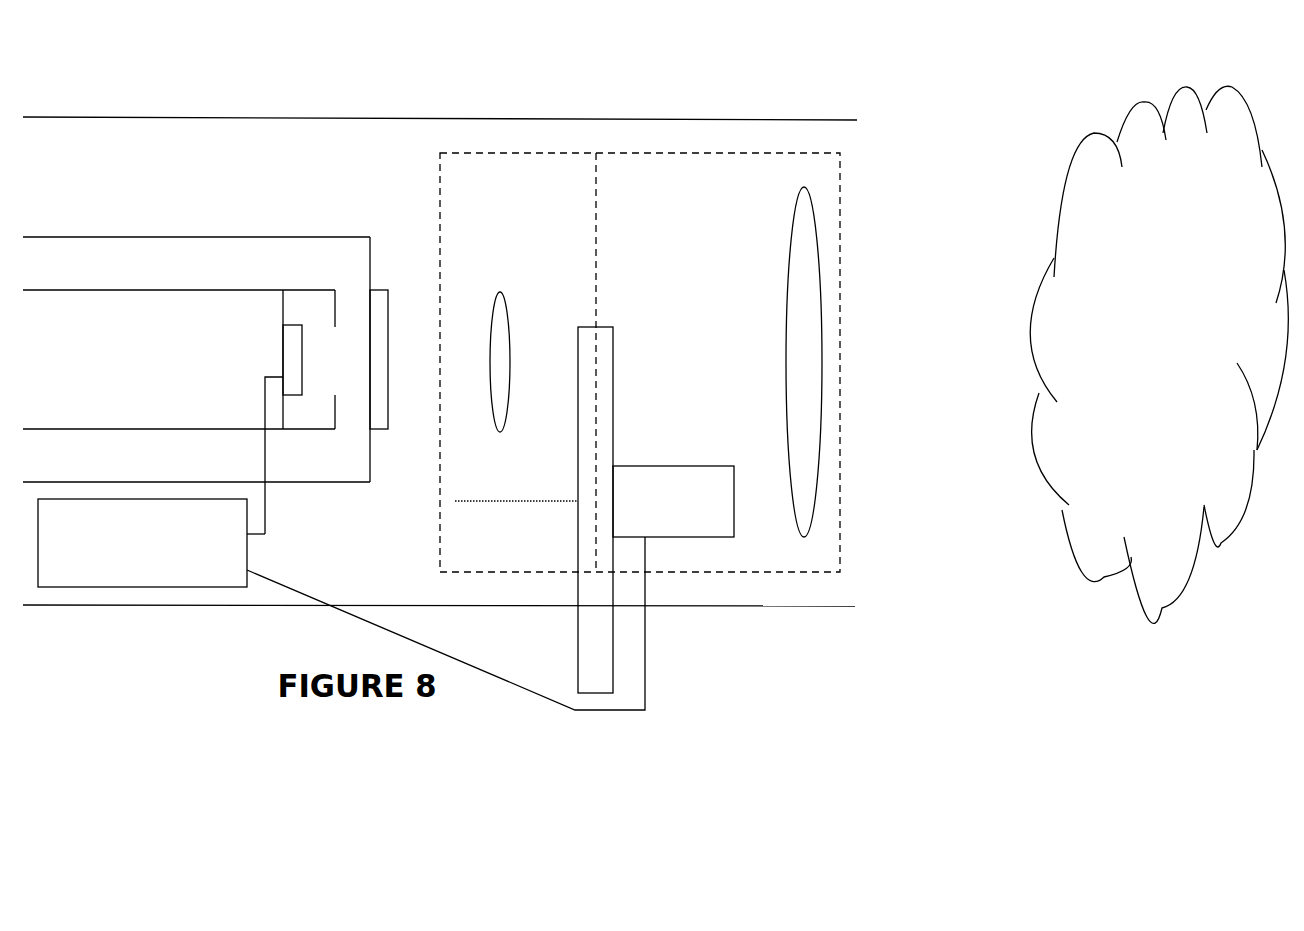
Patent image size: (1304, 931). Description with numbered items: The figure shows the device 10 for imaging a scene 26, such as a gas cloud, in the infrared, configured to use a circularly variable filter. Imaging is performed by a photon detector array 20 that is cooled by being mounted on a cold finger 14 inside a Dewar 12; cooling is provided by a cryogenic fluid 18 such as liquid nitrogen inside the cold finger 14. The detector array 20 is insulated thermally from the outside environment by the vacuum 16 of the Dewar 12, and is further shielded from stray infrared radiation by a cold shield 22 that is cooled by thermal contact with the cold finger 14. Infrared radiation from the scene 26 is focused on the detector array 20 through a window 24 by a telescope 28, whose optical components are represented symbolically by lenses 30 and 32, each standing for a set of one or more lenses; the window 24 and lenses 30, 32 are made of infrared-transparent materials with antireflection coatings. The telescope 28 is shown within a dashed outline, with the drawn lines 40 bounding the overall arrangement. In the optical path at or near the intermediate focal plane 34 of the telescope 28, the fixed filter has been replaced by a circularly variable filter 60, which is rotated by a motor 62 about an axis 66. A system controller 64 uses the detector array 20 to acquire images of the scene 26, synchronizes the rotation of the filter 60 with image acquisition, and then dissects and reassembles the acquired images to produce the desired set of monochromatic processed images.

The device 10 is at (771, 84).
The Dewar 12 is at (180, 237).
The cold finger 14 is at (248, 290).
The vacuum 16 is at (88, 269).
The cryogenic fluid 18 is at (54, 358).
The photon detector array 20 is at (283, 363).
The cold shield 22 is at (300, 432).
The window 24 is at (385, 430).
The scene 26 is at (1131, 309).
The telescope 28 is at (683, 572).
The lens 30 is at (804, 276).
The lens 32 is at (500, 295).
The intermediate focal plane 34 is at (597, 205).
The duct wall 40 is at (180, 117).
The circularly variable filter 60 is at (613, 398).
The motor 62 is at (661, 526).
The system controller 64 is at (131, 559).
The axis 66 is at (543, 502).